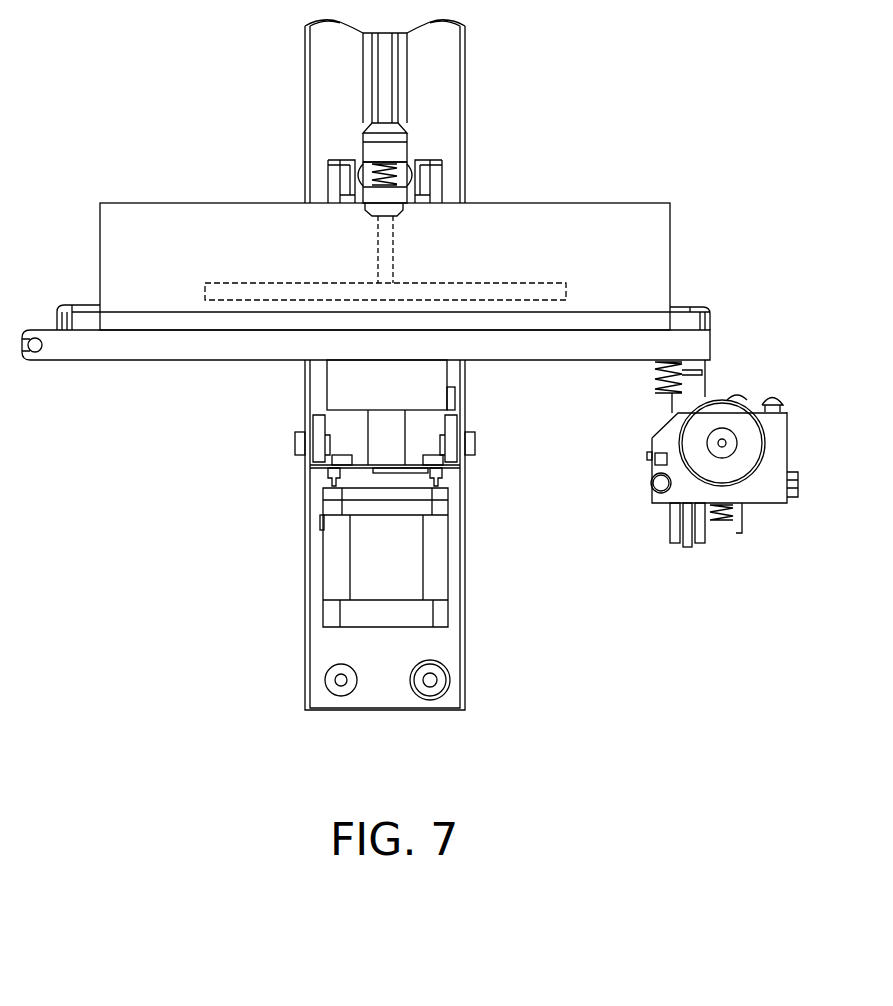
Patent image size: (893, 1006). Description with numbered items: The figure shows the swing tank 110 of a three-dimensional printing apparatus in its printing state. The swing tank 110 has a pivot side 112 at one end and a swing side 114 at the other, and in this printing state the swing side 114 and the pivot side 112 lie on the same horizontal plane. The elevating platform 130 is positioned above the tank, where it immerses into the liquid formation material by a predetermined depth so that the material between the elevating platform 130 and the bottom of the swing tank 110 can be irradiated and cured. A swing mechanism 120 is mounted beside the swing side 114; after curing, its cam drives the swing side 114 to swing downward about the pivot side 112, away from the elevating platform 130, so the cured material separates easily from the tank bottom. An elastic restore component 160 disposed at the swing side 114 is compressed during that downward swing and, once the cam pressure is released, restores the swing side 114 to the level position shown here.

The swing tank 110 is at (700, 248).
The pivot side 112 is at (37, 332).
The swing side 114 is at (690, 345).
The swing mechanism 120 is at (767, 488).
The elevating platform 130 is at (536, 283).
The elastic restore component 160 is at (652, 383).